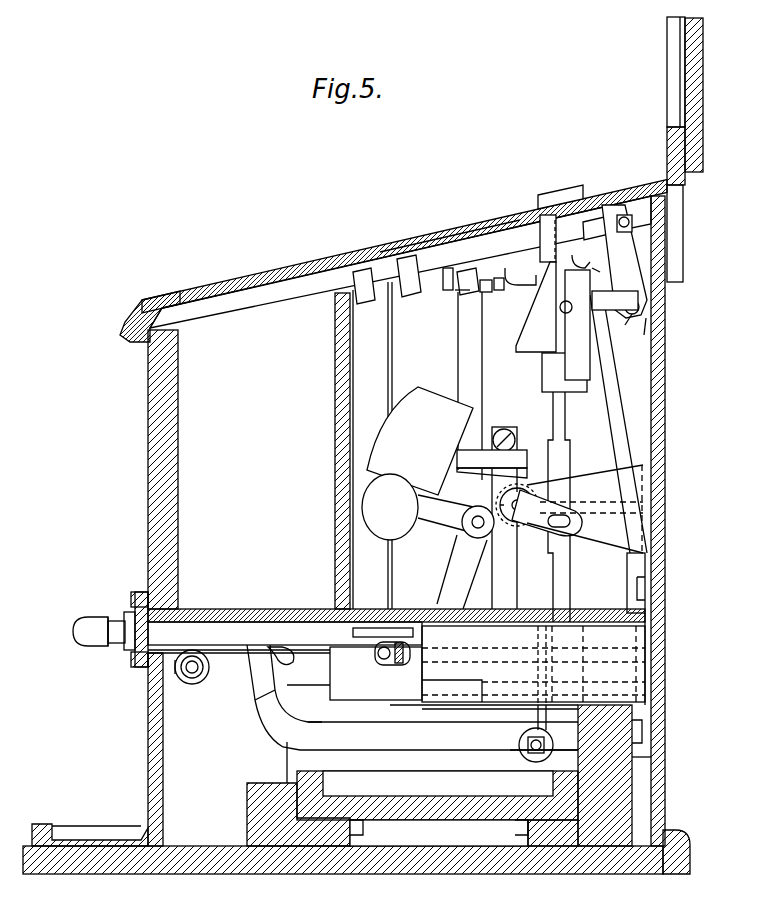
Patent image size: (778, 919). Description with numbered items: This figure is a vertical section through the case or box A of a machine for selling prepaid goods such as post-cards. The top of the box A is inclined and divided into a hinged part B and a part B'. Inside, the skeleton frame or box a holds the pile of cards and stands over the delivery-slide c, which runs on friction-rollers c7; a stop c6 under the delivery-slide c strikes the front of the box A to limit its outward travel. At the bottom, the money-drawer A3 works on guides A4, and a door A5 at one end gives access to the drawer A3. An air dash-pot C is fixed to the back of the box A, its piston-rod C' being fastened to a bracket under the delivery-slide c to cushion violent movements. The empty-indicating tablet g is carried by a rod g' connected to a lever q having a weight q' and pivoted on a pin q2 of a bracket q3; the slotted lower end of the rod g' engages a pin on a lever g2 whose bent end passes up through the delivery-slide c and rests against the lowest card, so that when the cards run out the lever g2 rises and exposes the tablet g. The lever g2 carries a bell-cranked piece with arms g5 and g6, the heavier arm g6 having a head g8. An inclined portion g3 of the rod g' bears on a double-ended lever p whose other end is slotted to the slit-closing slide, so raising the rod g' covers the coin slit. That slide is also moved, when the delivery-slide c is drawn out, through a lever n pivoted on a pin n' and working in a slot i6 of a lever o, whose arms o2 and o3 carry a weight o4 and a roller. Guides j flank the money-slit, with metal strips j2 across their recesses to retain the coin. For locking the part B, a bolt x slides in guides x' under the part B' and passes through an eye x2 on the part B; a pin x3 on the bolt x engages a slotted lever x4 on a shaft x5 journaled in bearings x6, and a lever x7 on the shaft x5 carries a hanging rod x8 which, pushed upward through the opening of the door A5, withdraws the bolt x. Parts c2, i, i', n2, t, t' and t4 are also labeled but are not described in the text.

The case or box A is at (363, 445).
The money-drawer A3 is at (437, 808).
The guides A4 is at (278, 783).
The door A5 is at (500, 715).
The hinged part of lid B is at (393, 261).
The fixed part of lid B' is at (450, 228).
The air dash-pot C is at (533, 664).
The piston-rod C' is at (395, 665).
The skeleton frame or box a is at (256, 469).
The delivery-slide c is at (359, 629).
The bar plate c2 is at (381, 639).
The stop c6 is at (354, 673).
The friction-rollers c7 is at (185, 680).
The tablet g is at (552, 465).
The rod g' is at (570, 557).
The lever g2 is at (432, 744).
The inclined portion g3 is at (536, 307).
The arm of bell-cranked piece g5 is at (288, 660).
The arm of bell-cranked piece g6 is at (250, 688).
The head or flat portion g8 is at (202, 667).
The inclined rod i is at (612, 424).
The slide i' is at (575, 325).
The slot i6 is at (462, 292).
The guides j is at (581, 258).
The strips of metal j2 is at (599, 265).
The lever n is at (441, 285).
The pin n' is at (497, 297).
The stop block n2 is at (482, 293).
The lever o is at (470, 386).
The arm o2 is at (456, 516).
The arm o3 is at (462, 572).
The weight o4 is at (390, 507).
The double-ended lever p is at (520, 286).
The lever q is at (504, 504).
The weight q' is at (420, 441).
The pin q2 is at (520, 520).
The bracket q3 is at (585, 509).
The screw t is at (493, 518).
The bar t' is at (492, 459).
The plate t4 is at (492, 472).
The bolt x is at (521, 254).
The guides x' is at (409, 287).
The eye x2 is at (364, 297).
The pin x3 is at (634, 229).
The lever x4 is at (624, 261).
The shaft x5 is at (623, 331).
The bearings x6 is at (640, 339).
The lever x7 is at (615, 303).
The rod x8 is at (542, 388).